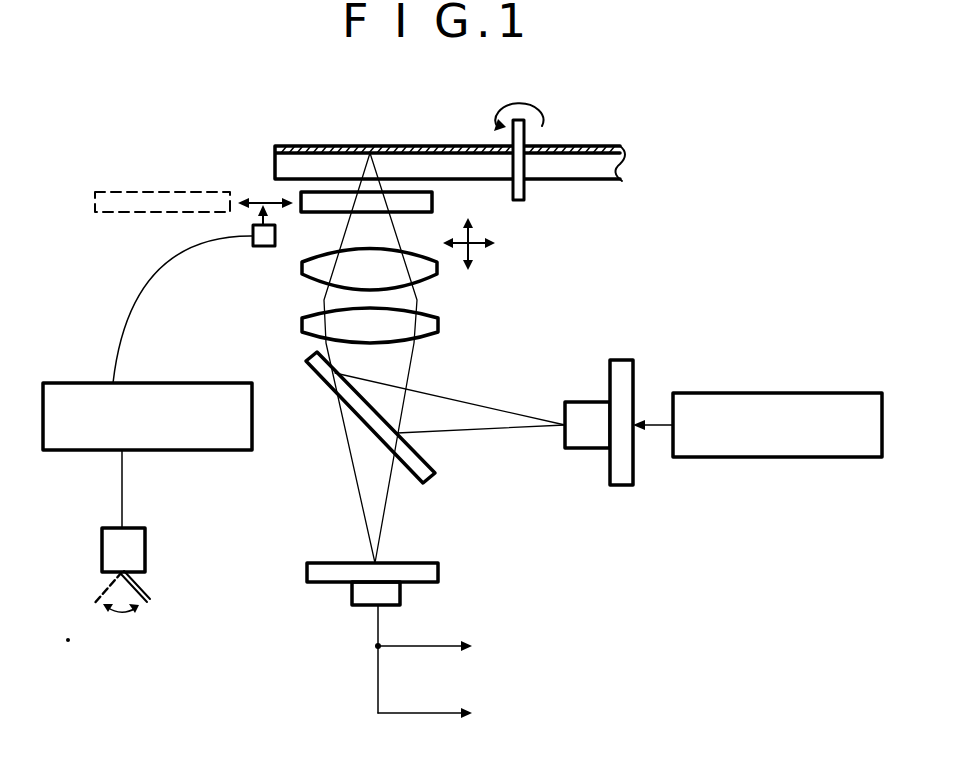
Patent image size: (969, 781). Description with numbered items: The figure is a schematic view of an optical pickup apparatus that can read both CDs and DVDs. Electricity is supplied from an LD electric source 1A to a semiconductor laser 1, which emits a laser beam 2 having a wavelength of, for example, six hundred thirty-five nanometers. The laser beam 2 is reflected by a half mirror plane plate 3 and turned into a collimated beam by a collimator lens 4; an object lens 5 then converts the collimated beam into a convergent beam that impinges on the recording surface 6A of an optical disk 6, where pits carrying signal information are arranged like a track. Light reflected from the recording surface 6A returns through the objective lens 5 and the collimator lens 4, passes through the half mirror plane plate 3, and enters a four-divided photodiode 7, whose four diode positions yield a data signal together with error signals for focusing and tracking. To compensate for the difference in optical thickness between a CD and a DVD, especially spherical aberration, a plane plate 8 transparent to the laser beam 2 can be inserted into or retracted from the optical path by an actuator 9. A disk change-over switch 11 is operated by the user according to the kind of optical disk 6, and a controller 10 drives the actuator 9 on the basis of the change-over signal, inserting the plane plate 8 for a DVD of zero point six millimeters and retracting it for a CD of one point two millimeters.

The semiconductor laser 1 is at (583, 405).
The LD electric source 1A is at (728, 392).
The laser beam 2 is at (476, 412).
The half mirror plane plate 3 is at (320, 377).
The collimator lens 4 is at (302, 326).
The object lens 5 is at (302, 271).
The optical disk 6 is at (280, 164).
The recording surface 6A is at (336, 146).
The four-divided photodiode 7 is at (437, 562).
The plane plate 8 is at (433, 198).
The actuator 9 is at (256, 247).
The controller 10 is at (90, 383).
The disk change-over switch 11 is at (146, 537).